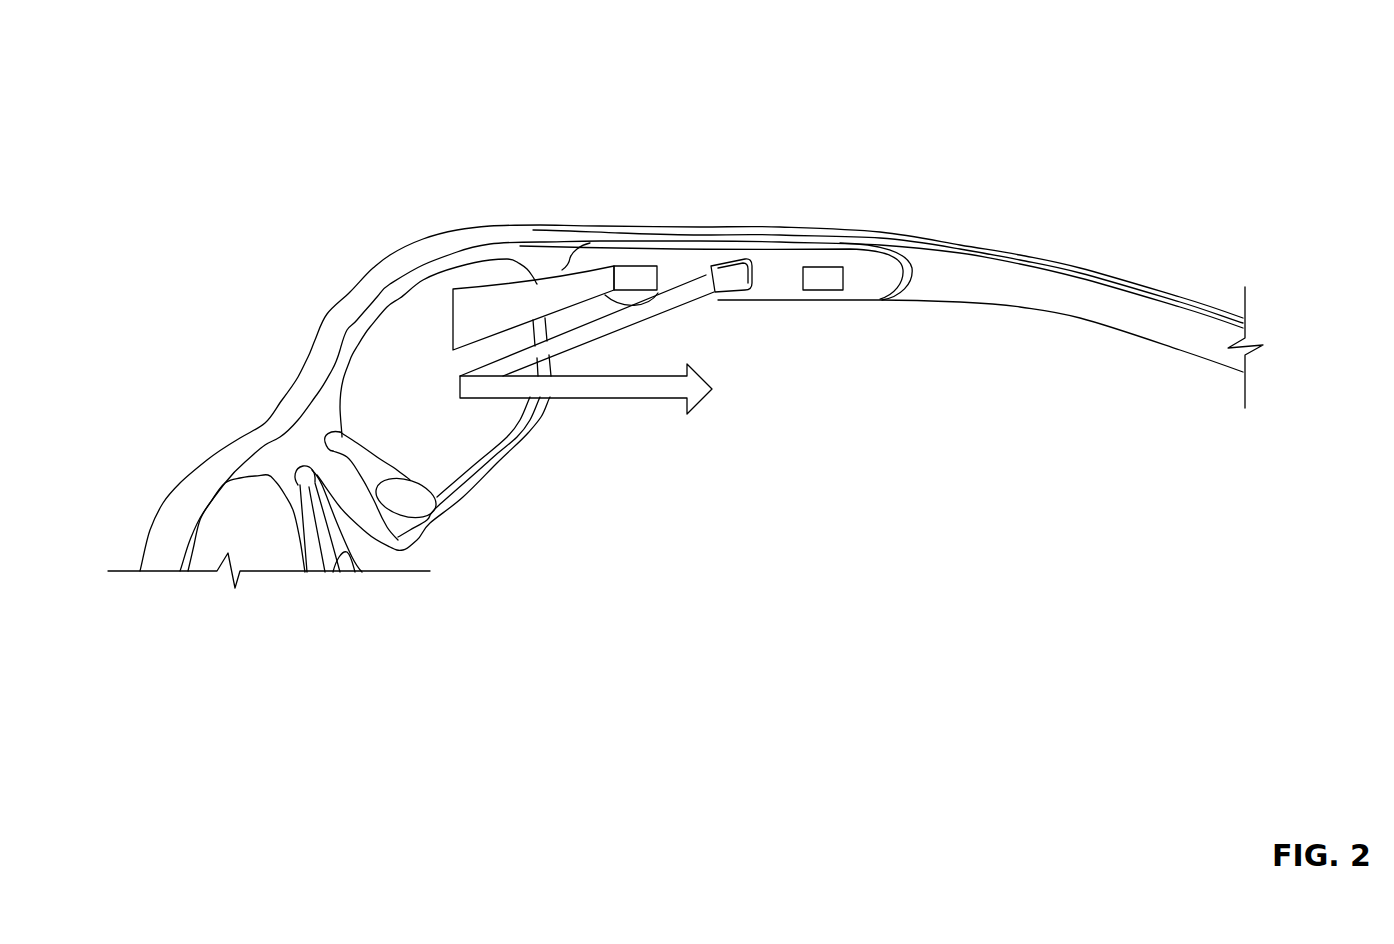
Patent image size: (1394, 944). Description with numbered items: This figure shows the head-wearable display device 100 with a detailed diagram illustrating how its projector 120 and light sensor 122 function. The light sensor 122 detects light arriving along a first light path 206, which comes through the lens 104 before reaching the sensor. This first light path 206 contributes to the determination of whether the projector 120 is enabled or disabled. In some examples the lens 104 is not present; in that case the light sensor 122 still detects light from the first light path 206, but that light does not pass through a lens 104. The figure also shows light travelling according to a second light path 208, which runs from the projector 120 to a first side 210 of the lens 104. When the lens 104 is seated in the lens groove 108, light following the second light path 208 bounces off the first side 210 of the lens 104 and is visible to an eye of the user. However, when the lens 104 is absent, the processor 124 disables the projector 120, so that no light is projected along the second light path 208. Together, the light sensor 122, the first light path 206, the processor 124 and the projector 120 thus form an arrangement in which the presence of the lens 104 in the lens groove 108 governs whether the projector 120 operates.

The head-wearable display device 100 is at (1048, 65).
The lens 104 is at (386, 332).
The lens groove 108 is at (461, 470).
The projector 120 is at (725, 274).
The light sensor 122 is at (630, 274).
The processor 124 is at (830, 278).
The first light path 206 is at (548, 292).
The second light path 208 is at (637, 312).
The first side of the lens 210 is at (480, 433).